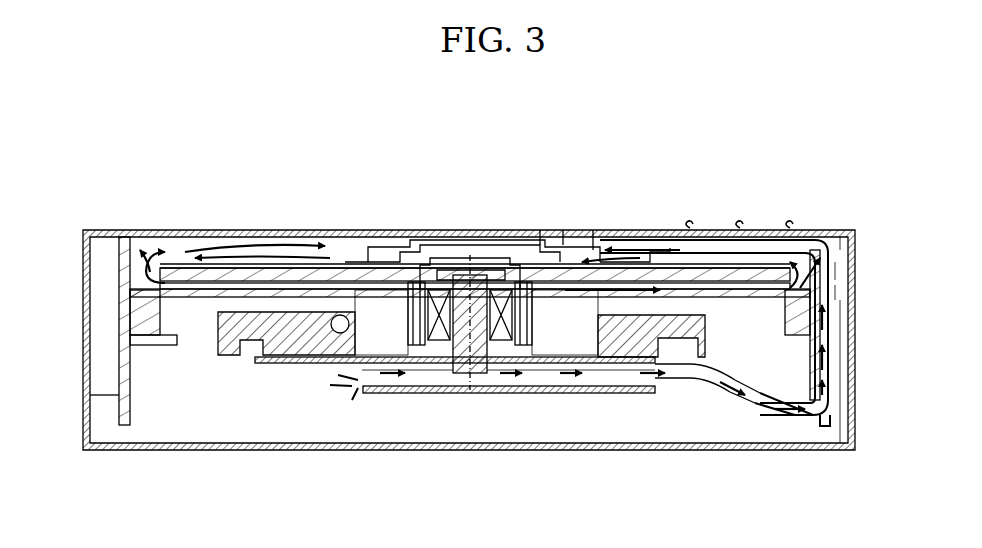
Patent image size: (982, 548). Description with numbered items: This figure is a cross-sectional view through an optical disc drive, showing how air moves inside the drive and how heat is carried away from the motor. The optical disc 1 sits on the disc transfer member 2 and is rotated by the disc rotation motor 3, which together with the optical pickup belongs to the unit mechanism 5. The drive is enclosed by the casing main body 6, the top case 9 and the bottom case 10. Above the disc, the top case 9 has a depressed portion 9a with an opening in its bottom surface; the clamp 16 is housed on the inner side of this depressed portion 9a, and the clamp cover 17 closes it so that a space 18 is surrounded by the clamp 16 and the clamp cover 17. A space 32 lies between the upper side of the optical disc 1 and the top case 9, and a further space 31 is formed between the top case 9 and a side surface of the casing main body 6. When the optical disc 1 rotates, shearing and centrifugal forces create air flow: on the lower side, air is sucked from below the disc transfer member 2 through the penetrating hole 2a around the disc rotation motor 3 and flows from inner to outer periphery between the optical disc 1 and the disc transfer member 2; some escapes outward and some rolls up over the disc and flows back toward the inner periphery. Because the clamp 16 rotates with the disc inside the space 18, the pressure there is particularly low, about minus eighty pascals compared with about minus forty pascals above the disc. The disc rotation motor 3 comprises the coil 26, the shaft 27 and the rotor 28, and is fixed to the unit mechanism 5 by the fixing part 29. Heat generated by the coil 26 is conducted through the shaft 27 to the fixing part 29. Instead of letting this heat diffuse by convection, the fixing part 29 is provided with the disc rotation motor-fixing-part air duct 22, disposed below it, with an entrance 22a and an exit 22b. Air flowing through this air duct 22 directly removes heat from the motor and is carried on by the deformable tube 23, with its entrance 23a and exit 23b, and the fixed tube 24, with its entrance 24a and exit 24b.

The optical disc 1 is at (233, 264).
The disc transfer member 2 is at (150, 292).
The penetrating hole 2a is at (394, 372).
The disc rotation motor 3 is at (393, 305).
The unit mechanism 5 is at (250, 345).
The casing main body 6 is at (119, 365).
The top case 9 is at (107, 230).
The depressed portion 9a is at (393, 343).
The bottom case 10 is at (130, 450).
The clamp 16 is at (520, 258).
The clamp cover 17 is at (394, 248).
The space 18 is at (563, 230).
The disc rotation motor-fixing-part air duct 22 is at (436, 366).
The entrance of the disc rotation motor-fixing-part air duct 22a is at (346, 392).
The exit of the disc rotation motor-fixing-part air duct 22b is at (652, 385).
The deformable tube 23 is at (830, 428).
The entrance of the tube 23a is at (700, 395).
The exit of the tube 23b is at (845, 290).
The fixed tube 24 is at (738, 230).
The entrance of the tube 24a is at (845, 272).
The exit of the tube 24b is at (628, 230).
The coil 26 is at (520, 370).
The shaft 27 is at (472, 373).
The rotor 28 is at (572, 366).
The fixing part 29 is at (295, 360).
The space 31 is at (840, 232).
The space 32 is at (593, 230).